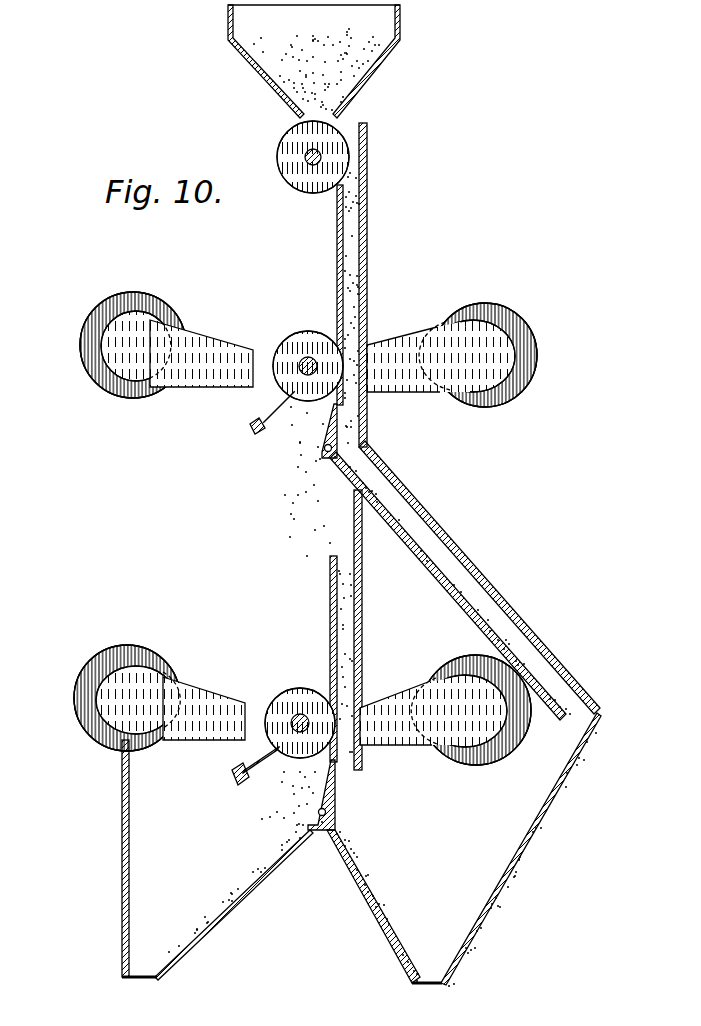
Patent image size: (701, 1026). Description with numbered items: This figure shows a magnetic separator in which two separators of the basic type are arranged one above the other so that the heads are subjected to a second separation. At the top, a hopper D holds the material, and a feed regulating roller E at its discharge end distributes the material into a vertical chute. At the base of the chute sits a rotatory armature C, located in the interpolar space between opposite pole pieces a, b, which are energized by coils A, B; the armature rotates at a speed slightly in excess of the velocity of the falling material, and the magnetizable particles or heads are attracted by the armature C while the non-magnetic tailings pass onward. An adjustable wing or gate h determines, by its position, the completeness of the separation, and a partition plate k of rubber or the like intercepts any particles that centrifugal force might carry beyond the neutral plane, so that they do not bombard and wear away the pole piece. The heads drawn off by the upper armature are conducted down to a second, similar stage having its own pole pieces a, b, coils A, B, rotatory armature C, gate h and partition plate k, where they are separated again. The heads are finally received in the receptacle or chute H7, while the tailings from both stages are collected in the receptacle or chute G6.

The hopper D is at (229, 28).
The feed regulating roller E is at (278, 148).
The coil A is at (80, 334).
The coil B is at (545, 352).
The rotatory armature C is at (296, 328).
The pole piece a is at (201, 527).
The pole piece b is at (415, 533).
The partition plate k is at (272, 404).
The adjustable wing or gate h is at (323, 434).
The receptacle or chute H7 is at (217, 860).
The receptacle or chute G6 is at (464, 849).